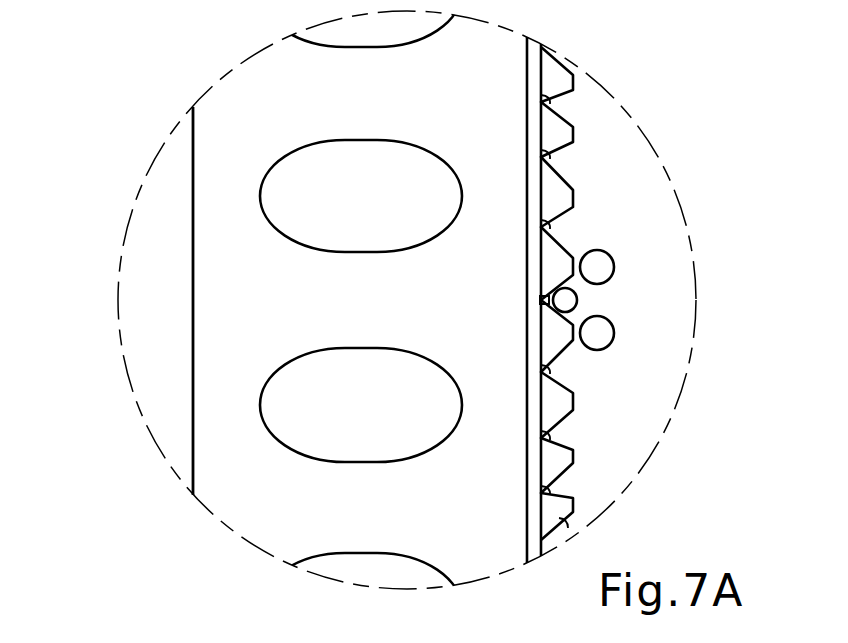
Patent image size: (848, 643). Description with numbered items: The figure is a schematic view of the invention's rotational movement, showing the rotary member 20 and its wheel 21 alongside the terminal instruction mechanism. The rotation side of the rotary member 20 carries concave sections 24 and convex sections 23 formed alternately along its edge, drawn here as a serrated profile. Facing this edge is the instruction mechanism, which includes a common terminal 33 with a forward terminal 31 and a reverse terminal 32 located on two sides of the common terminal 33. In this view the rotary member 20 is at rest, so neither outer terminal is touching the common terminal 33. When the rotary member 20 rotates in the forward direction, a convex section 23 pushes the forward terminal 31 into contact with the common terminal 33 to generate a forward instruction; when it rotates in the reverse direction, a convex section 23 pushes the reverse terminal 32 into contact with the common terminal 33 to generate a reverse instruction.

The rotary member 20 is at (190, 249).
The wheel 21 is at (243, 325).
The convex section 23 is at (557, 337).
The concave section 24 is at (584, 289).
The forward terminal 31 is at (597, 267).
The reverse terminal 32 is at (597, 333).
The common terminal 33 is at (565, 300).